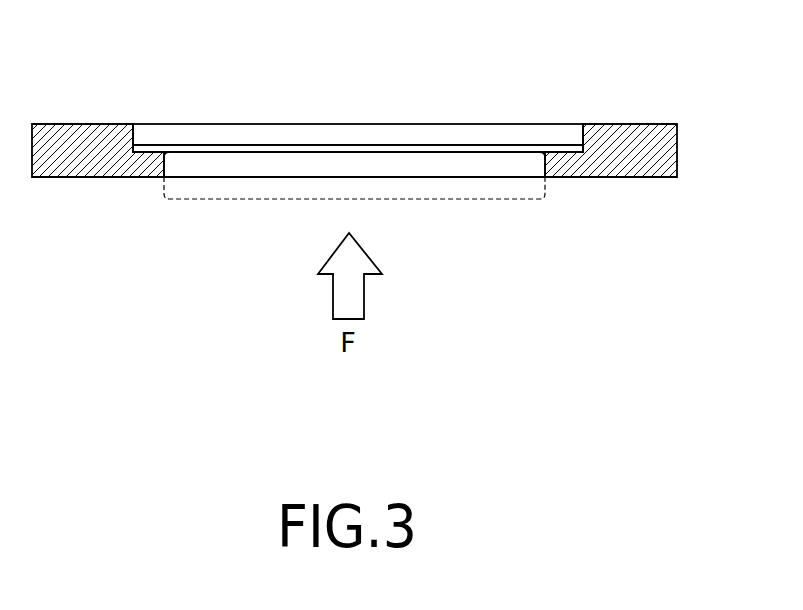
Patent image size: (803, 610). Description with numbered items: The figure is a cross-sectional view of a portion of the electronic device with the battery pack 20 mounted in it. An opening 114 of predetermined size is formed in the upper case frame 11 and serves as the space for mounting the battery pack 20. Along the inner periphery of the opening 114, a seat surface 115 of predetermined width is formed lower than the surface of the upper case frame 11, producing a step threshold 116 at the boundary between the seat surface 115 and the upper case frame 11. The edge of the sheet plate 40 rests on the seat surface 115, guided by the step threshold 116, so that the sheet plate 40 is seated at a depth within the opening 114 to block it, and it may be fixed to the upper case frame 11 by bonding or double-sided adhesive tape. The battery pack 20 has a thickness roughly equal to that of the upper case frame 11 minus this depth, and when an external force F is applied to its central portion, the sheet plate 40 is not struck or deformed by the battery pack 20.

The upper case frame 11 is at (94, 111).
The opening 114 is at (262, 128).
The seat surface 115 is at (155, 147).
The step threshold 116 is at (145, 127).
The sheet plate 40 is at (347, 132).
The battery pack 20 is at (446, 208).